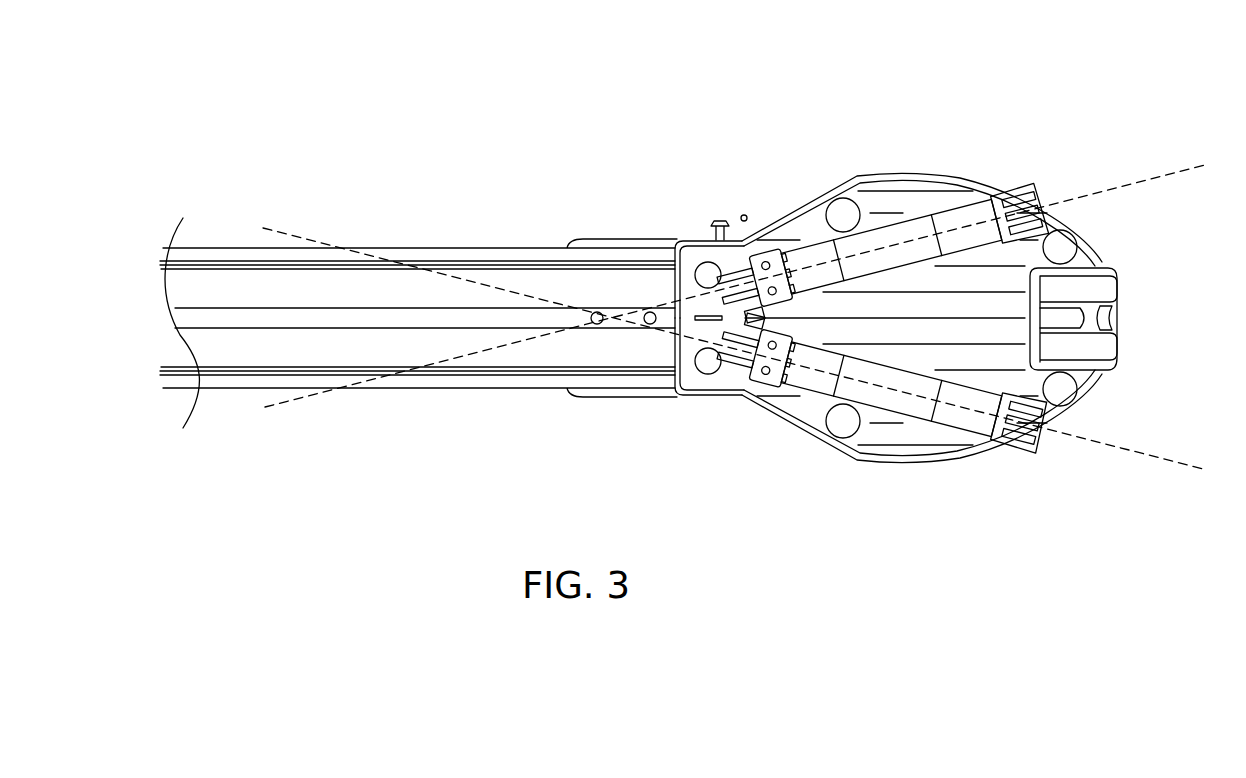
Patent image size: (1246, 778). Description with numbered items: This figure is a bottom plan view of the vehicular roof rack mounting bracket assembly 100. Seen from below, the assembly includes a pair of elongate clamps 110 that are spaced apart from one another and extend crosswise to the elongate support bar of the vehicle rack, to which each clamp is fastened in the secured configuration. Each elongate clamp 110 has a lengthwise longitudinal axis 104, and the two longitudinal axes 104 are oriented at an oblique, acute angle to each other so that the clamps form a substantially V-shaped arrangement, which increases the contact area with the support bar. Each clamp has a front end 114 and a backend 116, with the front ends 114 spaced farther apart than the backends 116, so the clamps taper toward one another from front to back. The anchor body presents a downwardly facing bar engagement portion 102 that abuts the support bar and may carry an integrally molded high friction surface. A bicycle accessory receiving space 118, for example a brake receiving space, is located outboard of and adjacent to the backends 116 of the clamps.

The bracket assembly 100 is at (887, 88).
The downwardly facing bar engagement portion 102 is at (887, 450).
The longitudinal axis 104 is at (1103, 192).
The elongate clamp 110 is at (832, 222).
The front end 114 is at (993, 190).
The backend 116 is at (775, 252).
The bicycle accessory receiving space 118 is at (722, 432).